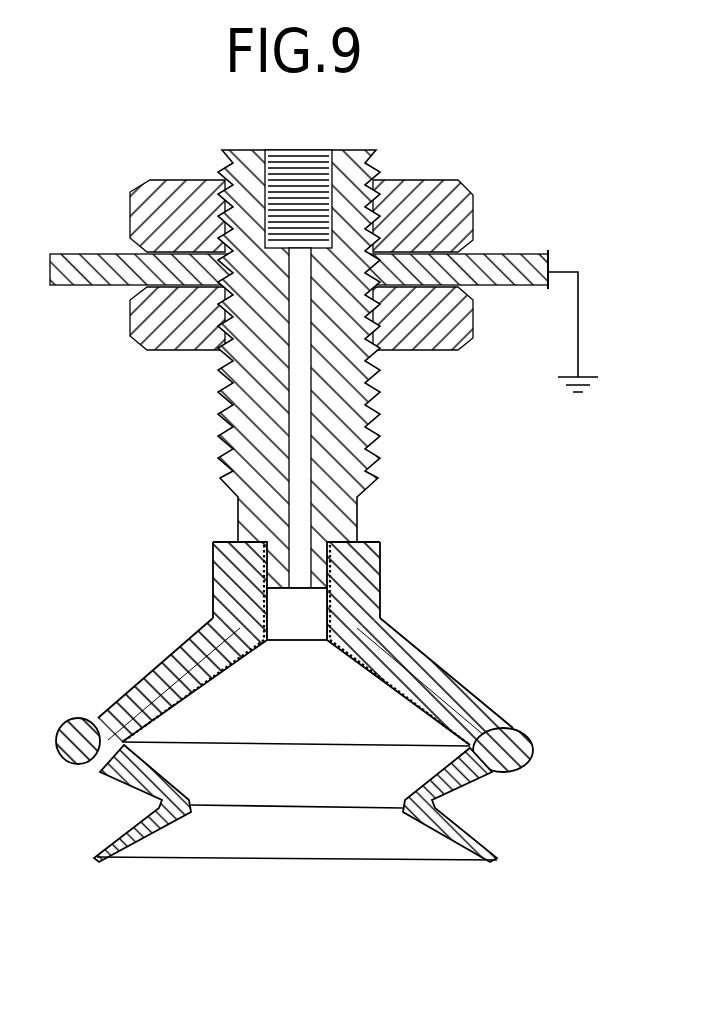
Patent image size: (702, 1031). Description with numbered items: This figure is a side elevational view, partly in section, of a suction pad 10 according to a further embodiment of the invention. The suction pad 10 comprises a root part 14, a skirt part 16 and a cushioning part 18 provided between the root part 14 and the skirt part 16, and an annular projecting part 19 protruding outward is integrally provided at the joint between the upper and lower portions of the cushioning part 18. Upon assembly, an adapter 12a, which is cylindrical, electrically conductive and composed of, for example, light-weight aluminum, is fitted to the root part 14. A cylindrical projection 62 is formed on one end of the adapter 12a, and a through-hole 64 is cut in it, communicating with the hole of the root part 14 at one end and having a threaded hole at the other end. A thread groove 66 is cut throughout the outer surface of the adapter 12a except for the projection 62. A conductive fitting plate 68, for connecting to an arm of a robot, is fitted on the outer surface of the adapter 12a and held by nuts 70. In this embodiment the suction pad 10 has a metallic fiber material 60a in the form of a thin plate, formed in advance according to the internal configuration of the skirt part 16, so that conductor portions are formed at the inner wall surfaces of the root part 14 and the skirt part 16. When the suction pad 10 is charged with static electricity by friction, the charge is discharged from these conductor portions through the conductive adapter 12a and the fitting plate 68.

The suction pad 10 is at (158, 617).
The adapter 12a is at (215, 463).
The root part 14 is at (378, 583).
The skirt part 16 is at (137, 785).
The cushioning part 18 is at (140, 678).
The annular projecting part 19 is at (527, 736).
The metallic fiber material 60a is at (435, 690).
The cylindrical projection 62 is at (279, 578).
The through-hole 64 is at (302, 422).
The thread groove 66 is at (385, 155).
The fitting plate 68 is at (500, 267).
The nuts 70 is at (450, 193).